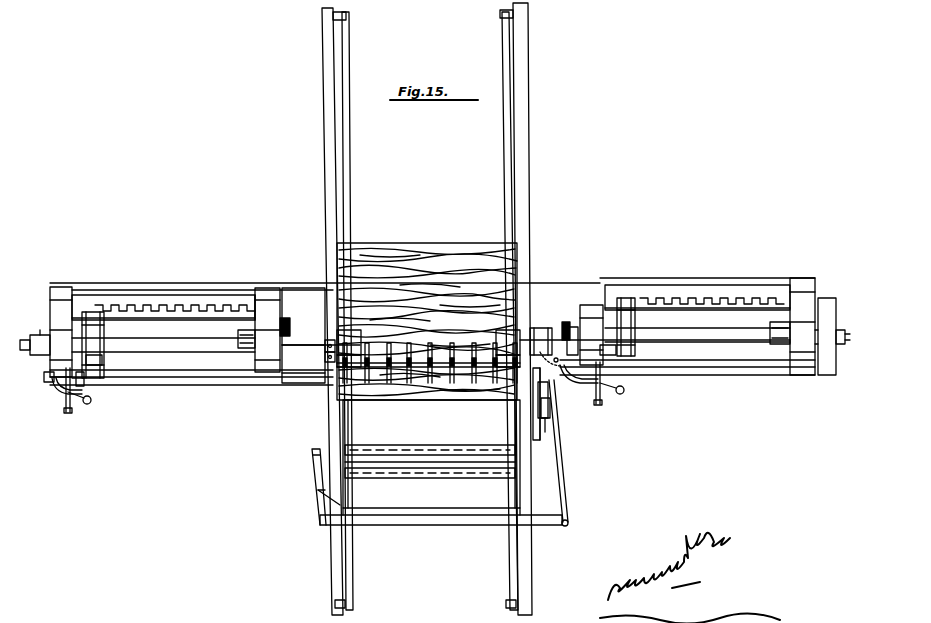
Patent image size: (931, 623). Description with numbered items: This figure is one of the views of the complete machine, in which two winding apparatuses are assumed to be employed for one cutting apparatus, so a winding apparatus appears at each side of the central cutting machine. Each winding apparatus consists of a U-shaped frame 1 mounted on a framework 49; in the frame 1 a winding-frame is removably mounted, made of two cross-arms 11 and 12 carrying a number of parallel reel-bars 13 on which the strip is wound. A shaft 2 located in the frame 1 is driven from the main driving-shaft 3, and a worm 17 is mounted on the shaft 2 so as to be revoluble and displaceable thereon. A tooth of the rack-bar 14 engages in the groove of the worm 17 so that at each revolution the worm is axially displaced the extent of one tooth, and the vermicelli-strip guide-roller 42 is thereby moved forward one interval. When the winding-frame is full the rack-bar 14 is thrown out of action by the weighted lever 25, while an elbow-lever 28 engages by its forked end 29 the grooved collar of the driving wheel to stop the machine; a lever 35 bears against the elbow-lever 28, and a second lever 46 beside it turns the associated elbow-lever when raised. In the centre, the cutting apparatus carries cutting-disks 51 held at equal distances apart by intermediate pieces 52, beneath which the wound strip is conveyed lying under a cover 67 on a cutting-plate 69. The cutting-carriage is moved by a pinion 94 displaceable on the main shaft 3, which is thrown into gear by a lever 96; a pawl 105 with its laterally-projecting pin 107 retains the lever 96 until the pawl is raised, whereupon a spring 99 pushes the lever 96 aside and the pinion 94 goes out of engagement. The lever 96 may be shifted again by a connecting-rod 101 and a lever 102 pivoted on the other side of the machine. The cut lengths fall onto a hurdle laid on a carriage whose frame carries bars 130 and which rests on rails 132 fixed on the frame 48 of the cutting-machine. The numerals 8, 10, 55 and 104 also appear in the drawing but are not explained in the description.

The U-shaped frame 1 is at (58, 290).
The shaft 2 is at (226, 318).
The main driving-shaft 3 is at (210, 354).
The hand wheel 8 is at (828, 368).
The bearing bracket 10 is at (42, 333).
The cross-arm 11 is at (244, 346).
The cross-arm 12 is at (614, 302).
The reel-bars 13 is at (155, 343).
The rack-bar 14 is at (165, 302).
The worm 17 is at (95, 312).
The weighted lever 25 is at (84, 382).
The elbow-lever 28 is at (58, 392).
The forked end 29 is at (48, 380).
The lever 35 is at (67, 414).
The guide-roller 42 is at (102, 360).
The lever 46 is at (74, 402).
The frame 48 is at (323, 128).
The framework 49 is at (312, 384).
The cutting-disks 51 is at (406, 368).
The intermediate pieces 52 is at (478, 370).
The bearing block 55 is at (325, 356).
The cover 67 is at (430, 462).
The cutting-plate 69 is at (431, 454).
The pinion 94 is at (538, 330).
The lever 96 is at (566, 480).
The spring 99 is at (556, 364).
The connecting-rod 101 is at (432, 526).
The lever 102 is at (316, 463).
The pawl 104 is at (548, 410).
The pawl 105 is at (540, 396).
The pin 107 is at (545, 410).
The bars 130 is at (424, 246).
The rails 132 is at (348, 185).